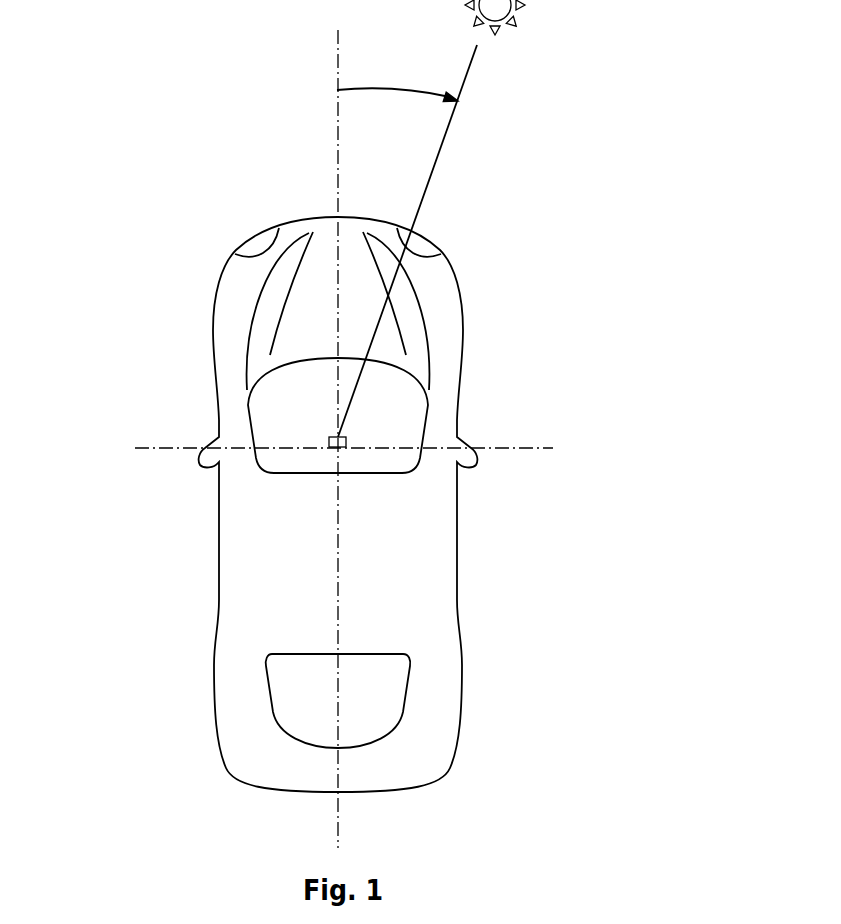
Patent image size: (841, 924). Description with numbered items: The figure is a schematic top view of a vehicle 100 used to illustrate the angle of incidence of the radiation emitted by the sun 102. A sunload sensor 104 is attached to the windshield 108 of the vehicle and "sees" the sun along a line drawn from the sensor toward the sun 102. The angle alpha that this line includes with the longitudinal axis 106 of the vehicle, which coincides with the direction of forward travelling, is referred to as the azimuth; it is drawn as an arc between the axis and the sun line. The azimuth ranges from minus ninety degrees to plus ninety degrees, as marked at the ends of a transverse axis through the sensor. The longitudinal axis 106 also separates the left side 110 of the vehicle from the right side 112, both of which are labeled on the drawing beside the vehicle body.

The vehicle 100 is at (118, 65).
The sun 102 is at (508, 13).
The sunload sensor 104 is at (336, 449).
The longitudinal axis 106 is at (339, 842).
The windshield 108 is at (411, 407).
The left side 110 is at (146, 808).
The right side 112 is at (593, 808).